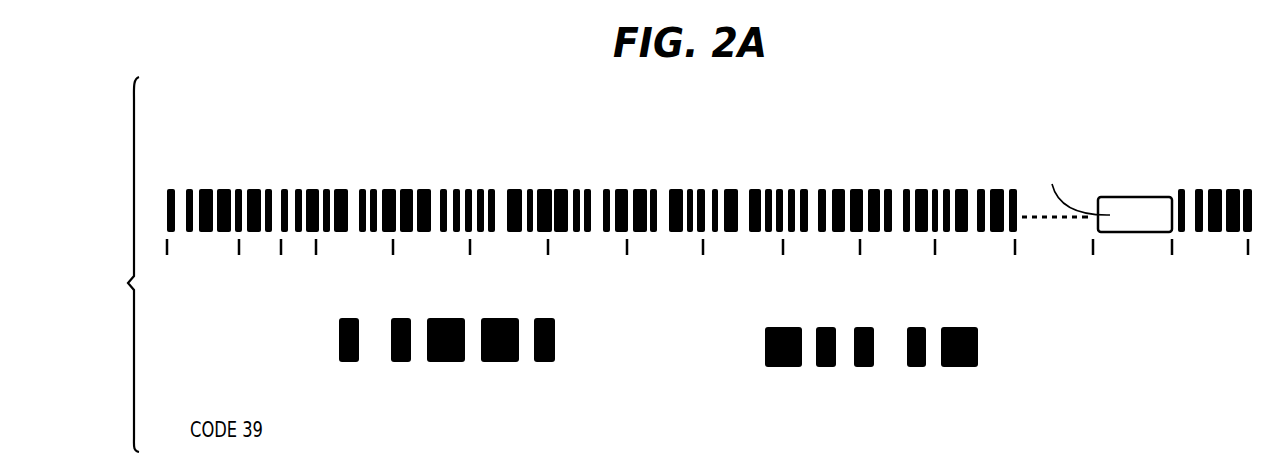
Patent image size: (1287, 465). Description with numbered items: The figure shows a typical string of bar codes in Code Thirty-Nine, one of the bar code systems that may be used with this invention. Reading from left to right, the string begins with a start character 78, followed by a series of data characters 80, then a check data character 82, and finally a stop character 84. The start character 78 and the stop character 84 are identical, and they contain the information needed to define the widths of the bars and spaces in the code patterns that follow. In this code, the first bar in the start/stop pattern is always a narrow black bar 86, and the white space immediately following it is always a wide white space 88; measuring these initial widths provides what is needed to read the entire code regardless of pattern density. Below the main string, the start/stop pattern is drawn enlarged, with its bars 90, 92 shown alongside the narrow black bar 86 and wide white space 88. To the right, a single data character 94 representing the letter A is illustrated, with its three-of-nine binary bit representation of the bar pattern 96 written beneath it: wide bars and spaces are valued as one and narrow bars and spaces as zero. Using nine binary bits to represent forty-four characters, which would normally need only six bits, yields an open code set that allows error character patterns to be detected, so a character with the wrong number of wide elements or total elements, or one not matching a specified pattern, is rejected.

The start character 78 is at (709, 172).
The data characters 80 is at (973, 181).
The check data character 82 is at (1123, 194).
The stop character 84 is at (1228, 193).
The narrow black bar 86 is at (345, 365).
The wide white space 88 is at (388, 363).
The wide bar 90 is at (437, 365).
The narrow bar 92 is at (535, 365).
The data character 94 is at (762, 340).
The binary bit representation of the bar pattern 96 is at (770, 380).